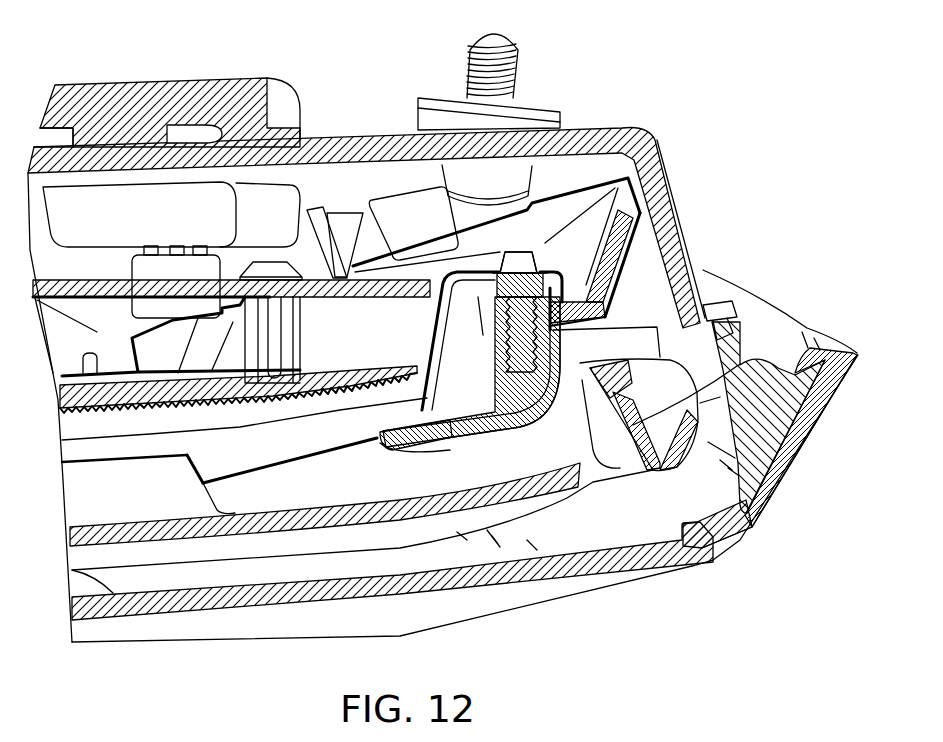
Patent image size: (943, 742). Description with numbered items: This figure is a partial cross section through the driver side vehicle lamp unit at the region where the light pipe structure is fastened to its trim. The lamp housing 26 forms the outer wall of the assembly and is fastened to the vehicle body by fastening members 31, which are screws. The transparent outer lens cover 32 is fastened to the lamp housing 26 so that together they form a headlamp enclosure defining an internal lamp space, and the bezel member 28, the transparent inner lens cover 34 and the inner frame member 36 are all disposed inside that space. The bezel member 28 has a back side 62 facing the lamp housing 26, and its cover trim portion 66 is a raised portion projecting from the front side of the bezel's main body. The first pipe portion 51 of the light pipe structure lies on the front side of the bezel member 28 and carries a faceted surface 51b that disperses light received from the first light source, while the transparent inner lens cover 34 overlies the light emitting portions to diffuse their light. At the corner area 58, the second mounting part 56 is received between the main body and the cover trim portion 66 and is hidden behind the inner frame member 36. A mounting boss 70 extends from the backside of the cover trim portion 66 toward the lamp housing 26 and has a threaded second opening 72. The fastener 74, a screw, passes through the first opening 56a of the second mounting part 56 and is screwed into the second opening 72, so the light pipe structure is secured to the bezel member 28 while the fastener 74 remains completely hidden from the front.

The lamp housing 26 is at (362, 135).
The bezel member 28 is at (640, 230).
The fastening members 31 is at (519, 68).
The transparent outer lens cover 32 is at (92, 645).
The transparent inner lens cover 34 is at (68, 563).
The inner frame member 36 is at (765, 357).
The first pipe portion 51 is at (128, 462).
The faceted surface 51b is at (163, 405).
The second mounting part 56 is at (436, 318).
The first opening 56a is at (600, 292).
The corner area 58 is at (365, 436).
The back side 62 is at (550, 198).
The cover trim portion 66 is at (500, 440).
The mounting boss 70 is at (558, 373).
The second opening 72 is at (608, 313).
The fastener 74 is at (520, 250).